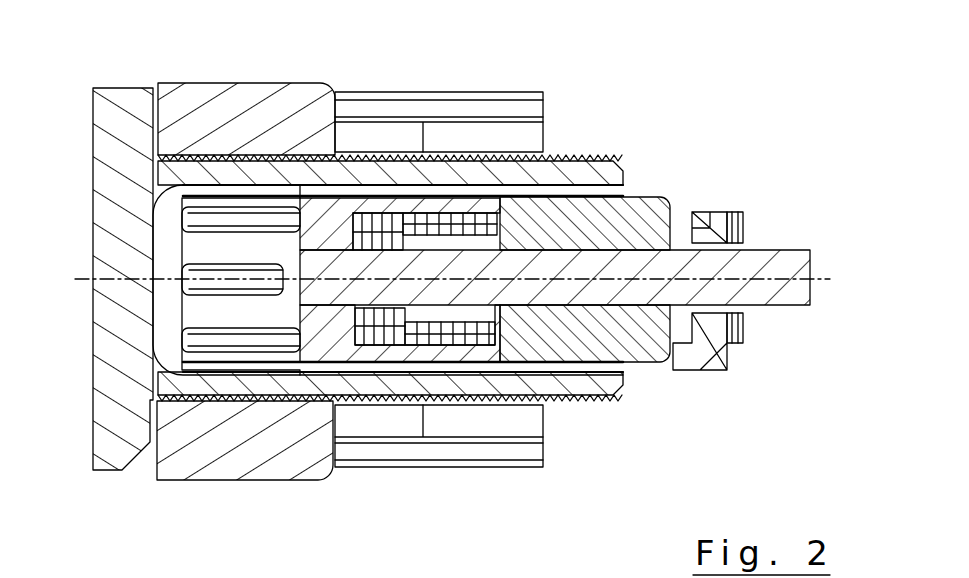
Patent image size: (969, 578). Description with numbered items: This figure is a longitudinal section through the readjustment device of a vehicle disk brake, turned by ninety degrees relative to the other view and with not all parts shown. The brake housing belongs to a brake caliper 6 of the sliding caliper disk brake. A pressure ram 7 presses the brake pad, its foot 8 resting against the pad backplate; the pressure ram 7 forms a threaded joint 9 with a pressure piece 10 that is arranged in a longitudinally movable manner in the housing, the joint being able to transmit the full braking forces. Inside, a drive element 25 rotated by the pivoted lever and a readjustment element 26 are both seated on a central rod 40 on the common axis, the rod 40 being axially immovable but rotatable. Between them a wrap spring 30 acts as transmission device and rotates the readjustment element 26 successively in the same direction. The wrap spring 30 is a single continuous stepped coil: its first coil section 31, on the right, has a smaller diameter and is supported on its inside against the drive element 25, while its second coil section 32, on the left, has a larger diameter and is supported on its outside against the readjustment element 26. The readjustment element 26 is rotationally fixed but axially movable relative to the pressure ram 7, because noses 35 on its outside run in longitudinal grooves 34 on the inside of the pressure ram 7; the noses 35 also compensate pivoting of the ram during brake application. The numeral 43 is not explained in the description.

The brake caliper 6 is at (705, 370).
The pressure ram 7 is at (250, 383).
The foot 8 is at (102, 440).
The threaded joint 9 is at (278, 400).
The pressure piece 10 is at (205, 445).
The drive element 25 is at (578, 178).
The readjustment element 26 is at (340, 205).
The wrap spring 30 is at (425, 300).
The first coil section 31 is at (490, 345).
The second coil section 32 is at (357, 308).
The longitudinal grooves 34 is at (220, 268).
The noses 35 is at (333, 213).
The rod 40 is at (630, 262).
The retaining disc 43 is at (735, 330).